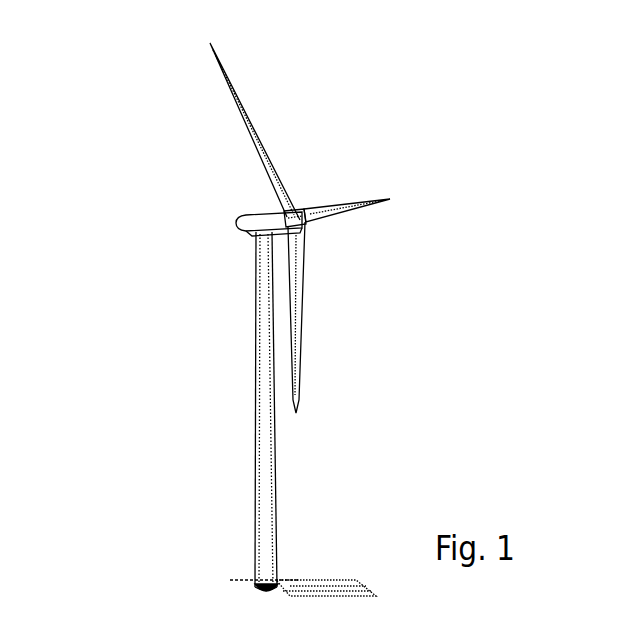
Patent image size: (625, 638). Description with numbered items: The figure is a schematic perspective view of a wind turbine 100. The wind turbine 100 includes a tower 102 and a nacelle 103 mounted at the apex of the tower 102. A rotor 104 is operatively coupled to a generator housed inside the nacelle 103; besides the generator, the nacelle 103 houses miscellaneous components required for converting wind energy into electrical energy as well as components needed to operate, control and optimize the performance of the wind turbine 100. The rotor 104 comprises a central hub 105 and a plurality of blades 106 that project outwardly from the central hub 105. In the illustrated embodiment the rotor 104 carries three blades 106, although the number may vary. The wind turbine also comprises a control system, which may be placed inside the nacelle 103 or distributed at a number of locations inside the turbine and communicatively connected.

The wind turbine 100 is at (128, 184).
The tower 102 is at (260, 348).
The nacelle 103 is at (255, 218).
The rotor 104 is at (366, 285).
The central hub 105 is at (298, 214).
The blades 106 is at (258, 133).